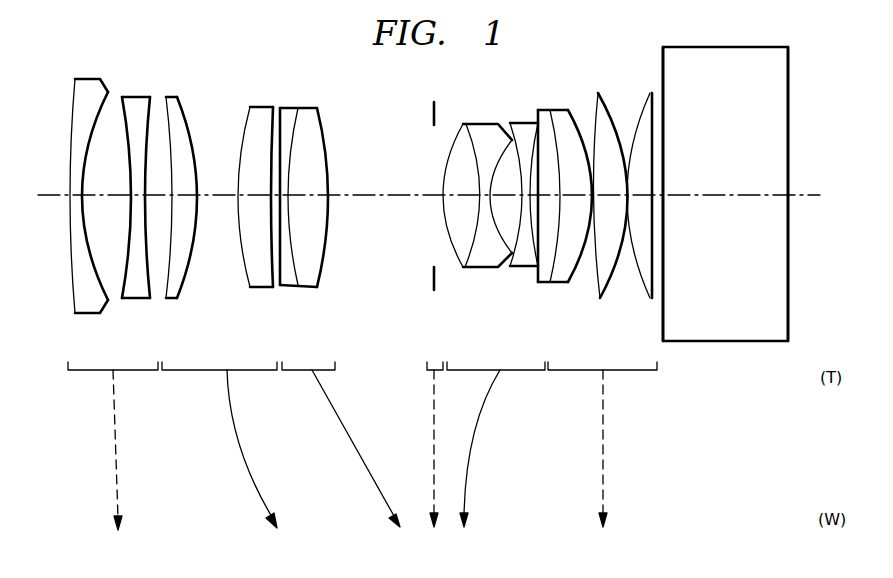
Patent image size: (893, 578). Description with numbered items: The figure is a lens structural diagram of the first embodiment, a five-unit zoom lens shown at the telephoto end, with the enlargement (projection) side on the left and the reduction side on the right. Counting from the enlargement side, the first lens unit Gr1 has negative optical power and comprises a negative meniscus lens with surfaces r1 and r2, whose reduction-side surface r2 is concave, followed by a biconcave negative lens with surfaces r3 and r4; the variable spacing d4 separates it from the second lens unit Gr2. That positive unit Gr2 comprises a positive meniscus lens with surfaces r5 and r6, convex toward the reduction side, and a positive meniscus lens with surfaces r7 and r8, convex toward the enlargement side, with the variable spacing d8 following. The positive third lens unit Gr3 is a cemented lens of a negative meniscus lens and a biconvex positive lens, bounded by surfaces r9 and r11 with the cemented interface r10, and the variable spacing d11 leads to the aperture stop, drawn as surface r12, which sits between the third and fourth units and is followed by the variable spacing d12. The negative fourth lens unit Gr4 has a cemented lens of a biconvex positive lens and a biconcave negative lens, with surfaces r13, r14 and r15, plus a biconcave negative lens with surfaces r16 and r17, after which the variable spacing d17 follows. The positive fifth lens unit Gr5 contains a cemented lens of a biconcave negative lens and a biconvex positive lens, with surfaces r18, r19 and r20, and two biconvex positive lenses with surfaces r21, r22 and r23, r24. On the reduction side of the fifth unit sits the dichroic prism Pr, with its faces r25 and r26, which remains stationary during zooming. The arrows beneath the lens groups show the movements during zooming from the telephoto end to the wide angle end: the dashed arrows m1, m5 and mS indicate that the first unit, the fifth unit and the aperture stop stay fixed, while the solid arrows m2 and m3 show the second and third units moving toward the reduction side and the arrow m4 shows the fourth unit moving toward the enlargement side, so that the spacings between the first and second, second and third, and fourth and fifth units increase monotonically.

The first surface r1 is at (70, 138).
The second surface r2 is at (86, 230).
The third surface r3 is at (130, 163).
The fourth surface r4 is at (148, 107).
The fourth axial distance d4 is at (158, 185).
The fifth surface r5 is at (167, 283).
The sixth surface r6 is at (184, 287).
The seventh surface r7 is at (243, 130).
The eighth surface r8 is at (270, 273).
The eighth axial distance d8 is at (270, 200).
The ninth surface r9 is at (281, 110).
The tenth surface r10 is at (300, 262).
The eleventh surface r11 is at (329, 153).
The eleventh axial distance d11 is at (381, 185).
The twelfth surface r12 is at (430, 112).
The twelfth axial distance d12 is at (443, 197).
The thirteenth surface r13 is at (446, 172).
The fourteenth surface r14 is at (472, 128).
The fifteenth surface r15 is at (497, 240).
The sixteenth surface r16 is at (513, 127).
The seventeenth surface r17 is at (535, 128).
The seventeenth axial distance d17 is at (523, 240).
The eighteenth surface r18 is at (552, 275).
The nineteenth surface r19 is at (555, 128).
The twentieth surface r20 is at (583, 265).
The twenty-first surface r21 is at (596, 108).
The twenty-second surface r22 is at (606, 302).
The twenty-third surface r23 is at (645, 94).
The twenty-fourth surface r24 is at (640, 268).
The twenty-fifth surface r25 is at (661, 56).
The twenty-sixth surface r26 is at (789, 83).
The dichroic prism Pr is at (723, 341).
The first lens unit Gr1 is at (113, 381).
The second lens unit Gr2 is at (219, 381).
The third lens unit Gr3 is at (308, 381).
The fourth lens unit Gr4 is at (496, 381).
The fifth lens unit Gr5 is at (602, 381).
The first unit movement arrow m1 is at (115, 443).
The second unit movement arrow m2 is at (245, 470).
The third unit movement arrow m3 is at (358, 457).
The aperture stop movement arrow mS is at (432, 446).
The fourth unit movement arrow m4 is at (473, 446).
The fifth unit movement arrow m5 is at (605, 446).